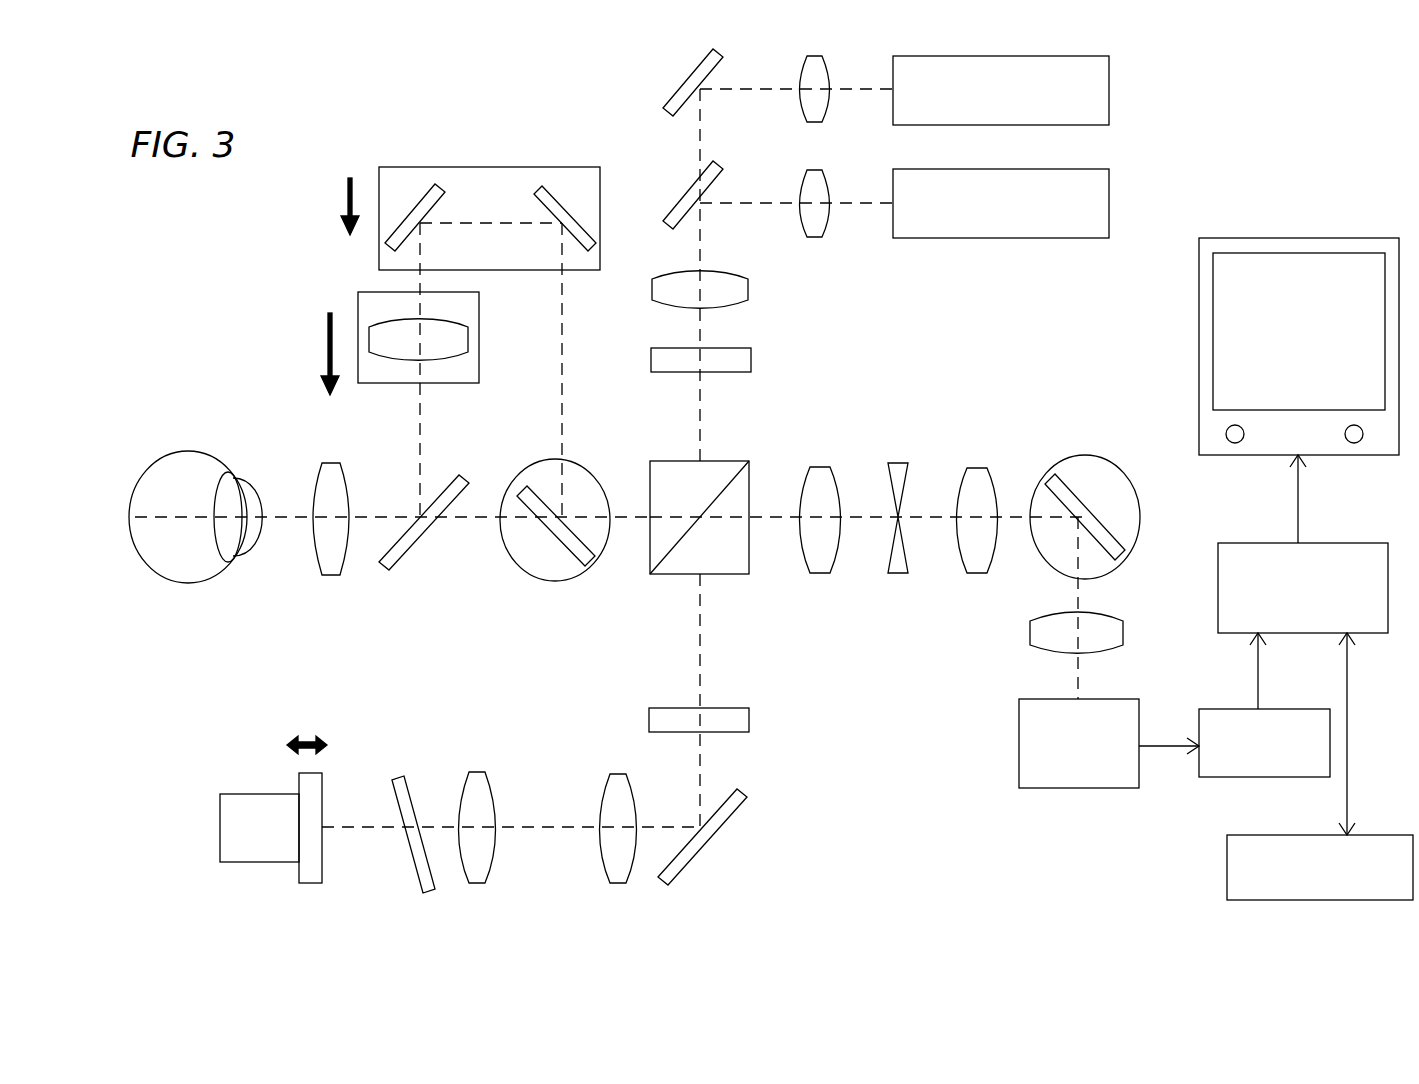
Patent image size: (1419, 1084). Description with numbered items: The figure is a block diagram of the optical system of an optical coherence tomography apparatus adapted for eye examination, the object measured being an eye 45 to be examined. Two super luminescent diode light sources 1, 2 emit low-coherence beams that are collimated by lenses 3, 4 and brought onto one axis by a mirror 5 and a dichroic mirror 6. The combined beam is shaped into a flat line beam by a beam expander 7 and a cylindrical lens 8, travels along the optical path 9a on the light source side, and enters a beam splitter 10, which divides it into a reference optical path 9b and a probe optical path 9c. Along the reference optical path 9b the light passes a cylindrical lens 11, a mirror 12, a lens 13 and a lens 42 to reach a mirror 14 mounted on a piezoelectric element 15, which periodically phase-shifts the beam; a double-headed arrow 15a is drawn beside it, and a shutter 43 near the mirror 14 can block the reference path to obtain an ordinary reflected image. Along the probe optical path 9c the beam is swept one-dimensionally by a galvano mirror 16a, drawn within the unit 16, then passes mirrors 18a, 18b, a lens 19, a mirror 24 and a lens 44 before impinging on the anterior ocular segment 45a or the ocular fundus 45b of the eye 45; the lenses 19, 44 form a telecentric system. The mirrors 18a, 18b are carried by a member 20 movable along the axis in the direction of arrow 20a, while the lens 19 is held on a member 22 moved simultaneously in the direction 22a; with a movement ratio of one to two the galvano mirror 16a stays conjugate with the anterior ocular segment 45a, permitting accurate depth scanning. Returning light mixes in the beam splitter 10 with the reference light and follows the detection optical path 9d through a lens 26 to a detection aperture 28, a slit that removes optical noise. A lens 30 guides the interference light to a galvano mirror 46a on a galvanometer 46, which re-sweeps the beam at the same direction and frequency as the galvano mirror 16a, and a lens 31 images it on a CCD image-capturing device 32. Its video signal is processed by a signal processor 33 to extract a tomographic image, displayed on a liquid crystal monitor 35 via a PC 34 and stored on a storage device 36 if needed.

The light source 1 is at (1109, 88).
The light source 2 is at (1109, 200).
The lens 3 is at (827, 70).
The lens 4 is at (827, 190).
The mirror 5 is at (718, 60).
The dichroic mirror 6 is at (718, 170).
The beam expander 7 is at (748, 289).
The cylindrical lens 8 is at (751, 358).
The optical path on the light source side 9a is at (700, 428).
The reference optical path 9b is at (700, 618).
The probe optical path 9c is at (630, 517).
The detection optical path 9d is at (767, 520).
The beam splitter 10 is at (728, 576).
The cylindrical lens 11 is at (749, 720).
The mirror 12 is at (726, 822).
The lens 13 is at (618, 774).
The mirror 14 is at (322, 862).
The piezoelectric element 15 is at (248, 862).
The movement direction 15a is at (310, 727).
The scanning mirror unit 16 is at (525, 462).
The galvano mirror 16a is at (555, 547).
The mirror 18a is at (552, 186).
The mirror 18b is at (432, 188).
The lens 19 is at (468, 340).
The member 20 is at (500, 167).
The arrow 20a is at (332, 206).
The member 22 is at (358, 300).
The direction 22a is at (304, 354).
The mirror 24 is at (456, 478).
The lens 26 is at (820, 467).
The detection aperture 28 is at (898, 573).
The lens 30 is at (970, 468).
The lens 31 is at (1123, 632).
The two-dimensional image-capturing device 32 is at (1019, 740).
The signal processor 33 is at (1212, 700).
The PC 34 is at (1322, 543).
The liquid crystal monitor display means 35 is at (1245, 238).
The storage device 36 is at (1227, 870).
The lens 42 is at (476, 772).
The shutter 43 is at (395, 768).
The lens 44 is at (330, 578).
The eye to be examined 45 is at (180, 583).
The anterior ocular segment 45a is at (248, 478).
The ocular fundus 45b is at (140, 478).
The galvanometer 46 is at (1140, 520).
The galvano mirror 46a is at (1052, 478).